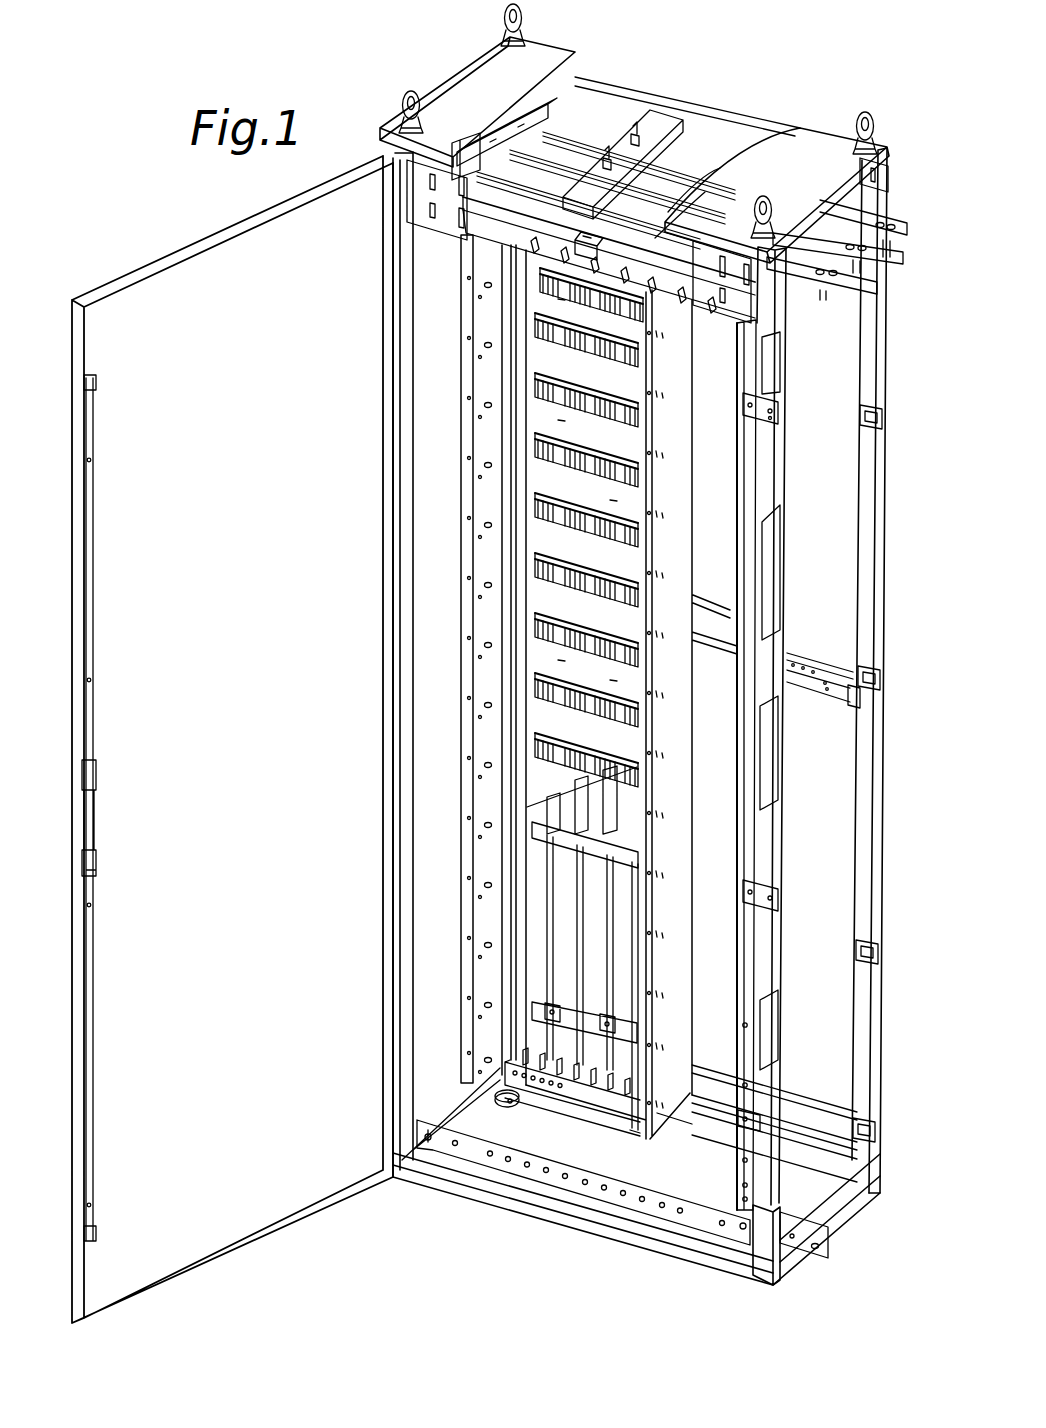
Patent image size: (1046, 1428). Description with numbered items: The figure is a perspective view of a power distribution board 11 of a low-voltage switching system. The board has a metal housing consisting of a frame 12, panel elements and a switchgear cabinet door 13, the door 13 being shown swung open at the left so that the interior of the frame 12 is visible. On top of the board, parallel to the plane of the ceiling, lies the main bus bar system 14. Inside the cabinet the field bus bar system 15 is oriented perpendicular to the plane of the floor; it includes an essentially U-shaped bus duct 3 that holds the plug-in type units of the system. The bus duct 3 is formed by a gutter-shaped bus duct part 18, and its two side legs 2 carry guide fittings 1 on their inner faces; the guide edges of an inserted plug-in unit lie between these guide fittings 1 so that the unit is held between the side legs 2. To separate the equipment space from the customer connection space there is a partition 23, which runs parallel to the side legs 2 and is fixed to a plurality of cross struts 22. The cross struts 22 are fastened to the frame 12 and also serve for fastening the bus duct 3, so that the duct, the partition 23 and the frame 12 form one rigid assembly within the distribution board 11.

The guide fittings 1 is at (478, 355).
The side legs 2 is at (665, 995).
The bus duct 3 is at (690, 988).
The power distribution board 11 is at (748, 90).
The frame 12 is at (865, 490).
The switchgear cabinet door 13 is at (132, 300).
The main bus bar system 14 is at (707, 178).
The field bus bar system 15 is at (590, 1082).
The gutter-shaped bus duct part 18 is at (688, 1085).
The cross struts 22 is at (813, 687).
The partition 23 is at (775, 455).